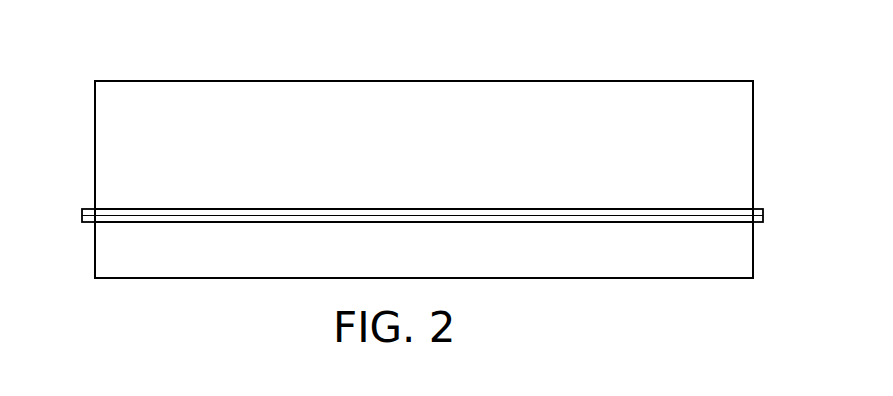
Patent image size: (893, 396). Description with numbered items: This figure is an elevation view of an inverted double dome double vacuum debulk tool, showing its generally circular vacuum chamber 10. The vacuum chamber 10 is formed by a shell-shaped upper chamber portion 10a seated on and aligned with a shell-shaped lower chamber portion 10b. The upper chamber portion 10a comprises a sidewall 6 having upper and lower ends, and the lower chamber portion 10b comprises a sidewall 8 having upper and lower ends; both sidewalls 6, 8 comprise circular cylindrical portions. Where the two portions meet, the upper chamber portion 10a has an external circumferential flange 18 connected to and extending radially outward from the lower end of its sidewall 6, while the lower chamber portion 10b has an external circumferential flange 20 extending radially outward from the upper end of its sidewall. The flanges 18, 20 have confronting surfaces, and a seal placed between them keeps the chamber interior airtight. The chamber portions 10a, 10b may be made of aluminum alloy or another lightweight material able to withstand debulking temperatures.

The vacuum chamber 10 is at (78, 110).
The upper chamber portion 10a is at (552, 80).
The lower chamber portion 10b is at (577, 280).
The sidewall 6 is at (733, 158).
The sidewall 8 is at (734, 242).
The external circumferential flange 18 is at (93, 209).
The external circumferential flange 20 is at (90, 224).